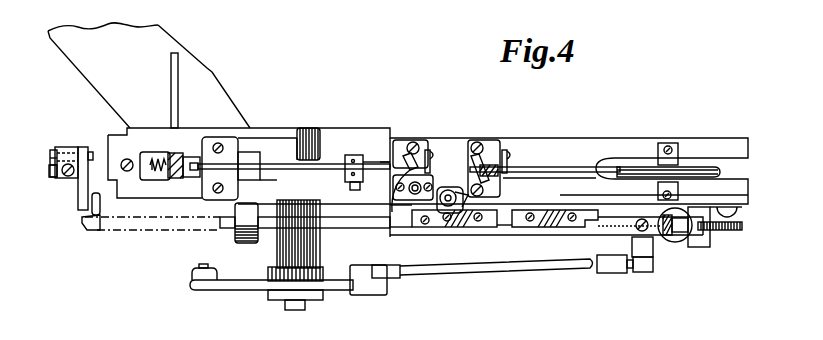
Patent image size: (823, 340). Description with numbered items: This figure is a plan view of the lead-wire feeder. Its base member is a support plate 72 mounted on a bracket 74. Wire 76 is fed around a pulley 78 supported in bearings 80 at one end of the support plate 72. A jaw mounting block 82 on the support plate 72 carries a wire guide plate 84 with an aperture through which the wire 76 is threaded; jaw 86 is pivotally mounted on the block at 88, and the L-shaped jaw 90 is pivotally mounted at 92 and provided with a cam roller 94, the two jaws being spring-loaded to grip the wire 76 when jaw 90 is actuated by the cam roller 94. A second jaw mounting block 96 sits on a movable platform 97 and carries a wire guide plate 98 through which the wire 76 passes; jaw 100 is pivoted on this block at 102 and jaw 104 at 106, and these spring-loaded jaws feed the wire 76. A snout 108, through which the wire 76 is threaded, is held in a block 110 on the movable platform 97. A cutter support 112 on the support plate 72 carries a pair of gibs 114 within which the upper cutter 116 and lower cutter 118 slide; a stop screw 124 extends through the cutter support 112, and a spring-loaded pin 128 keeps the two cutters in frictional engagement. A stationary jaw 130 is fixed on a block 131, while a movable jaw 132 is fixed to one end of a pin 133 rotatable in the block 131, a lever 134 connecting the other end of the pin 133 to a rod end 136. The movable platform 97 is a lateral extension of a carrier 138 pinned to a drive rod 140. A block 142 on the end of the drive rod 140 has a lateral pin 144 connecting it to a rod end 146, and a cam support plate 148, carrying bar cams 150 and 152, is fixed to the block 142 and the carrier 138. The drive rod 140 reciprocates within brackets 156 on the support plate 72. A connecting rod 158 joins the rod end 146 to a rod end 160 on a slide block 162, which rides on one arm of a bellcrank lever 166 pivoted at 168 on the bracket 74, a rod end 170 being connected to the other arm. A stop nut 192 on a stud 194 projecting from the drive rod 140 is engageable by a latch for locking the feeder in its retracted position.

The support plate 72 is at (282, 142).
The bracket 74 is at (167, 48).
The wire 76 is at (566, 170).
The pulley 78 is at (703, 162).
The bearings 80 is at (677, 182).
The jaw mounting block 82 is at (494, 147).
The wire guide plate 84 is at (507, 165).
The jaw 86 is at (496, 148).
The pivot of jaw 86 88 is at (477, 142).
The jaw 90 is at (457, 204).
The pivot of jaw 90 92 is at (484, 190).
The cam roller 94 is at (443, 206).
The jaw mounting block 96 is at (423, 150).
The movable platform 97 is at (377, 182).
The wire guide plate 98 is at (429, 147).
The jaw 100 is at (411, 143).
The pivot of jaw 100 102 is at (415, 147).
The jaw 104 is at (392, 212).
The pivot of jaw 104 106 is at (410, 198).
The snout 108 is at (323, 165).
The block 110 is at (352, 155).
The cutter support 112 is at (209, 196).
The gibs 114 is at (182, 153).
The upper cutter 116 is at (188, 160).
The lower cutter 118 is at (170, 157).
The stop screw 124 is at (223, 168).
The spring-loaded pin 128 is at (161, 171).
The stationary jaw 130 is at (50, 176).
The block 131 is at (74, 180).
The movable jaw 132 is at (52, 150).
The pin 133 is at (70, 147).
The lever 134 is at (85, 147).
The rod end 136 is at (97, 222).
The carrier 138 is at (408, 228).
The drive rod 140 is at (270, 226).
The block 142 is at (651, 250).
The pin 144 is at (643, 272).
The rod end 146 is at (614, 273).
The cam support plate 148 is at (558, 232).
The bar cam 150 is at (492, 222).
The bar cam 152 is at (523, 217).
The brackets 156 is at (246, 229).
The connecting rod 158 is at (505, 271).
The rod end 160 is at (393, 273).
The slide block 162 is at (368, 296).
The bellcrank lever 166 is at (338, 290).
The pivot of bellcrank lever 168 is at (290, 309).
The rod end 170 is at (197, 273).
The stop nut 192 is at (681, 247).
The stud 194 is at (731, 231).